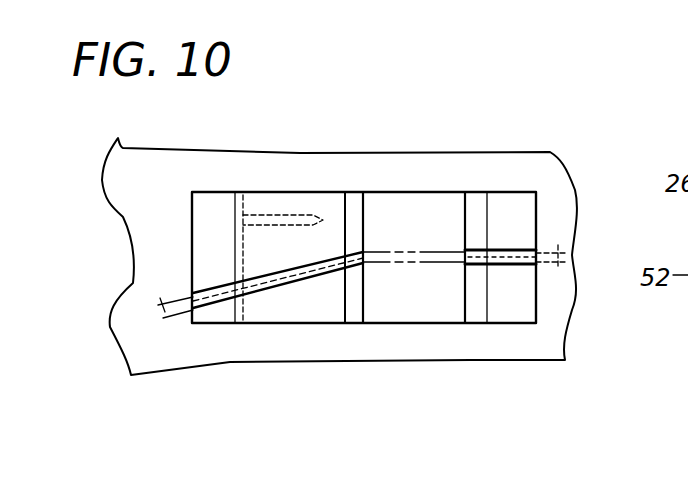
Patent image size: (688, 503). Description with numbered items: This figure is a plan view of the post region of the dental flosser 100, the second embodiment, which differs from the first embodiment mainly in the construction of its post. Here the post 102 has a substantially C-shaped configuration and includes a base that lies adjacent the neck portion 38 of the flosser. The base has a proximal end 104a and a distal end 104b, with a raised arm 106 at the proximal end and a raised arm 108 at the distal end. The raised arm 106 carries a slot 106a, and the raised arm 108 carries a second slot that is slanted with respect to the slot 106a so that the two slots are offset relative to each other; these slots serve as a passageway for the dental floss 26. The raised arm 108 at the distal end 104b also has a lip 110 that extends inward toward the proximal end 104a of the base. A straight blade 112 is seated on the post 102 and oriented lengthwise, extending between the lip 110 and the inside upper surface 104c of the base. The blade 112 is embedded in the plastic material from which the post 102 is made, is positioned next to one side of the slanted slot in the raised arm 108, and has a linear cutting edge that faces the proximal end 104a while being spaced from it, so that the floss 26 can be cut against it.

The dental floss 26 is at (181, 300).
The neck portion 38 is at (285, 353).
The dental flosser 100 is at (575, 290).
The post 102 is at (396, 180).
The proximal end 104a is at (505, 205).
The distal end 104b is at (205, 232).
The inside upper surface 104c is at (442, 310).
The raised arm 106 is at (525, 305).
The slot 106a is at (503, 260).
The raised arm 108 is at (262, 312).
The lip 110 is at (330, 310).
The straight blade 112 is at (278, 217).